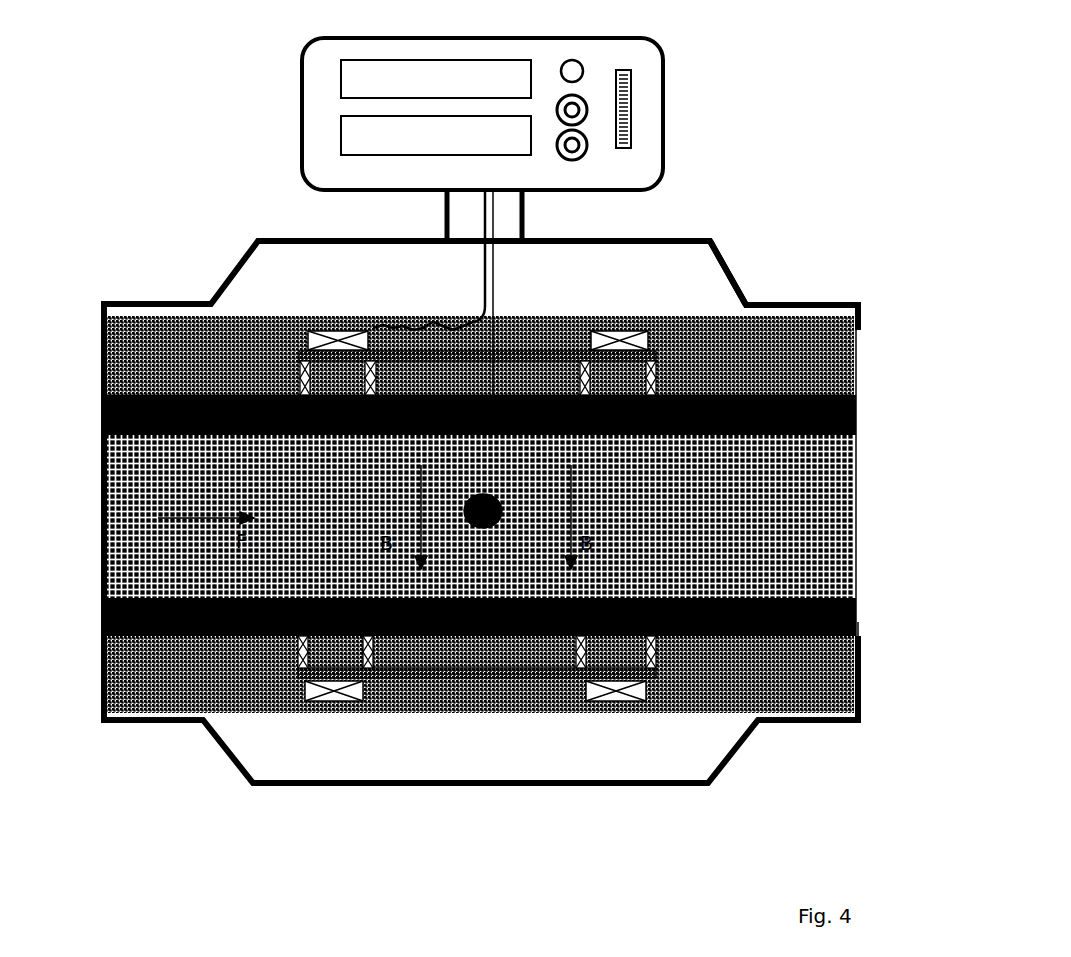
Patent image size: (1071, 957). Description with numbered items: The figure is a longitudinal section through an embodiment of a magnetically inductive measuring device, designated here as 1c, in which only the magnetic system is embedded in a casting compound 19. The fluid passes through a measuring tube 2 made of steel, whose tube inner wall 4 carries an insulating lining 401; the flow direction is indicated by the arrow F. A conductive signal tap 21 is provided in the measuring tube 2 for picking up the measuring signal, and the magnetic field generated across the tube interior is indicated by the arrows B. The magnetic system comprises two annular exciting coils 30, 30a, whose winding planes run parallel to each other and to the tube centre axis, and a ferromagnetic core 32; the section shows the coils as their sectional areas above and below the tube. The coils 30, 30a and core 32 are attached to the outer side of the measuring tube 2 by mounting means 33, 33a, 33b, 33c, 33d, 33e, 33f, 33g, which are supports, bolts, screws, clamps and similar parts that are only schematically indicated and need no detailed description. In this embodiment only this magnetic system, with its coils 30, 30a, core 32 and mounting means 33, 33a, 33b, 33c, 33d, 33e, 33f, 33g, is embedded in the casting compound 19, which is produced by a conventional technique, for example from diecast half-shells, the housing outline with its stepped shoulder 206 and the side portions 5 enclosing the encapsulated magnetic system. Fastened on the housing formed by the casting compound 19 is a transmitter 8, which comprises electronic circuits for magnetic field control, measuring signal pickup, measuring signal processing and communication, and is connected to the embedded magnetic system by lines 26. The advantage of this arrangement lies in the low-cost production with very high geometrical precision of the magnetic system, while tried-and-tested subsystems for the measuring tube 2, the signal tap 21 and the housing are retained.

The measuring device 1c is at (305, 864).
The measuring tube 2 is at (850, 407).
The tube inner wall 4 is at (187, 428).
The insulating lining 401 is at (158, 540).
The housing half 5 is at (95, 632).
The transmitter 8 is at (652, 110).
The casting compound 19 is at (148, 332).
The conductive signal tap 21 is at (494, 505).
The connecting line 26 is at (477, 207).
The exciting coil 30 is at (323, 323).
The exciting coil 30a is at (320, 694).
The ferromagnetic core 32 is at (300, 348).
The mounting means 33 is at (292, 379).
The mounting means 33a is at (370, 375).
The mounting means 33b is at (572, 378).
The mounting means 33c is at (648, 377).
The mounting means 33d is at (290, 648).
The mounting means 33e is at (365, 645).
The mounting means 33f is at (568, 645).
The mounting means 33g is at (650, 650).
The housing shoulder 206 is at (728, 274).